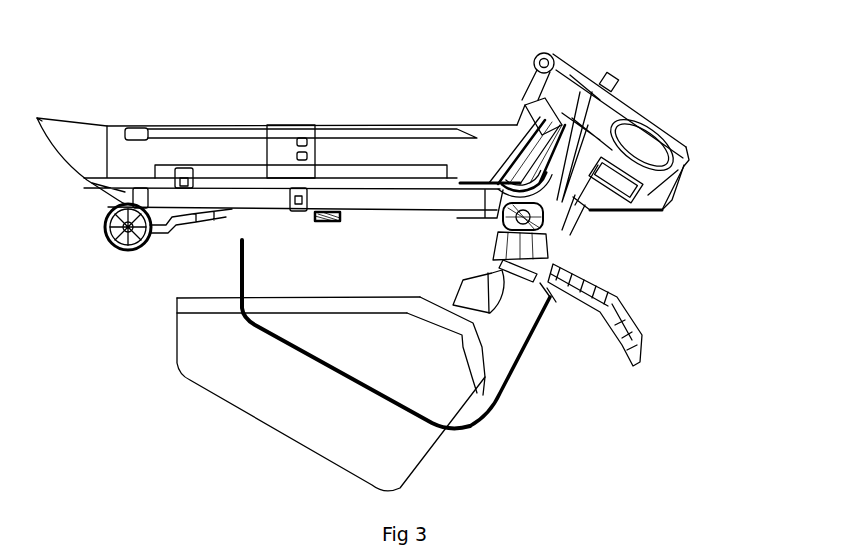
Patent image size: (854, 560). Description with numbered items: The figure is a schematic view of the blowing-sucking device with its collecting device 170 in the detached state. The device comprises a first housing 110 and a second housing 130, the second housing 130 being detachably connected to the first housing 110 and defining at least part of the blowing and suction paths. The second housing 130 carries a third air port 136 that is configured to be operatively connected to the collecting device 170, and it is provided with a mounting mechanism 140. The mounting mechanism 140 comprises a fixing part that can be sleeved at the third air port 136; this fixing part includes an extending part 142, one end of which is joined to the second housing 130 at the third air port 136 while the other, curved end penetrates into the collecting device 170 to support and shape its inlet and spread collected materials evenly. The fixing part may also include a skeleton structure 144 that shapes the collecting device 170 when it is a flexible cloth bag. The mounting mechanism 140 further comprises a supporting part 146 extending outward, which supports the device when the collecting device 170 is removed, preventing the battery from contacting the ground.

The first housing 110 is at (683, 191).
The second housing 130 is at (527, 90).
The third air port 136 is at (500, 248).
The mounting mechanism 140 is at (594, 246).
The extending part 142 is at (466, 290).
The skeleton structure 144 is at (513, 373).
The supporting part 146 is at (640, 333).
The collecting device 170 is at (433, 470).